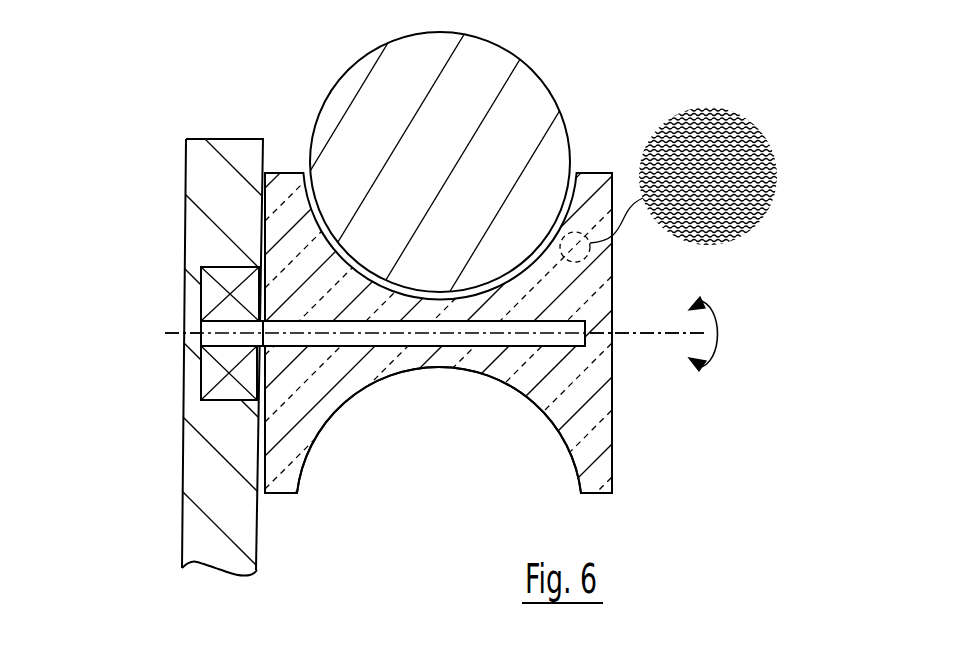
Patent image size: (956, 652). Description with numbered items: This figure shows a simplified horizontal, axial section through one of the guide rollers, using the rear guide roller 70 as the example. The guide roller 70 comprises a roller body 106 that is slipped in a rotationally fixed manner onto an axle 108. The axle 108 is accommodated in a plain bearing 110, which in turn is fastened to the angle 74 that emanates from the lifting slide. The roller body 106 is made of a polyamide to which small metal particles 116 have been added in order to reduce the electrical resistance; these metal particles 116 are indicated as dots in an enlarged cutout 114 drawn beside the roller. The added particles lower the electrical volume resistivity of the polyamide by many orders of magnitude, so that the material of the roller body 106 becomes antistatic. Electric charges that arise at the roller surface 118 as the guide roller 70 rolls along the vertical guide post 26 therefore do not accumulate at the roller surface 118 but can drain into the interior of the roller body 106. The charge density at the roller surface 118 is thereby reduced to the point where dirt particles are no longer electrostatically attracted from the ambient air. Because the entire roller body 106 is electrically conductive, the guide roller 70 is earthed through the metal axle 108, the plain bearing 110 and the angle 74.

The vertical guide post 26 is at (520, 92).
The rear guide roller 70 is at (650, 421).
The angle 74 is at (193, 485).
The roller body 106 is at (307, 423).
The axle 108 is at (410, 335).
The plain bearing 110 is at (210, 373).
The cutout 114 is at (697, 108).
The metal particles 116 is at (746, 232).
The roller surface 118 is at (523, 407).